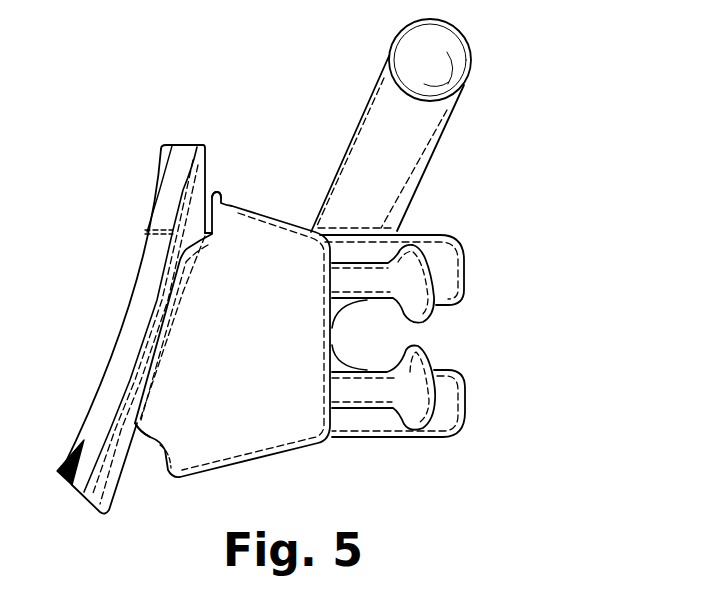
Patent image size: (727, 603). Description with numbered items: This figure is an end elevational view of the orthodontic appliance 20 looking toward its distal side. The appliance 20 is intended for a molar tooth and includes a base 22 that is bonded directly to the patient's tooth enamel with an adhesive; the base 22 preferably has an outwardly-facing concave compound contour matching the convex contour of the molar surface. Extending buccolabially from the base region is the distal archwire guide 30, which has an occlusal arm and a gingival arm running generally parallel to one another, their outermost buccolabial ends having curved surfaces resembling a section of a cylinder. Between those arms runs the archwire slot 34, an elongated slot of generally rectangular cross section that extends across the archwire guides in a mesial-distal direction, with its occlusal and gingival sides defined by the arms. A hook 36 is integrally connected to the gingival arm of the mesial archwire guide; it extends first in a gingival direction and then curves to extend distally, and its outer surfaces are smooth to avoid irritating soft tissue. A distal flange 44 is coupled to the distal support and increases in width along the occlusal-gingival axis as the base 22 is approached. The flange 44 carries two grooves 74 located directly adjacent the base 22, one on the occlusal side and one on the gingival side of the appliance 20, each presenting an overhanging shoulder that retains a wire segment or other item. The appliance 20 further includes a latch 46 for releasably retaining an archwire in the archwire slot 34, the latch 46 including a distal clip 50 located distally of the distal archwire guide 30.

The orthodontic appliance 20 is at (522, 175).
The base 22 is at (170, 163).
The distal archwire guide 30 is at (452, 389).
The archwire slot 34 is at (387, 367).
The hook 36 is at (443, 38).
The distal flange 44 is at (250, 423).
The latch 46 is at (482, 260).
The distal clip 50 is at (413, 400).
The grooves 74 is at (221, 205).